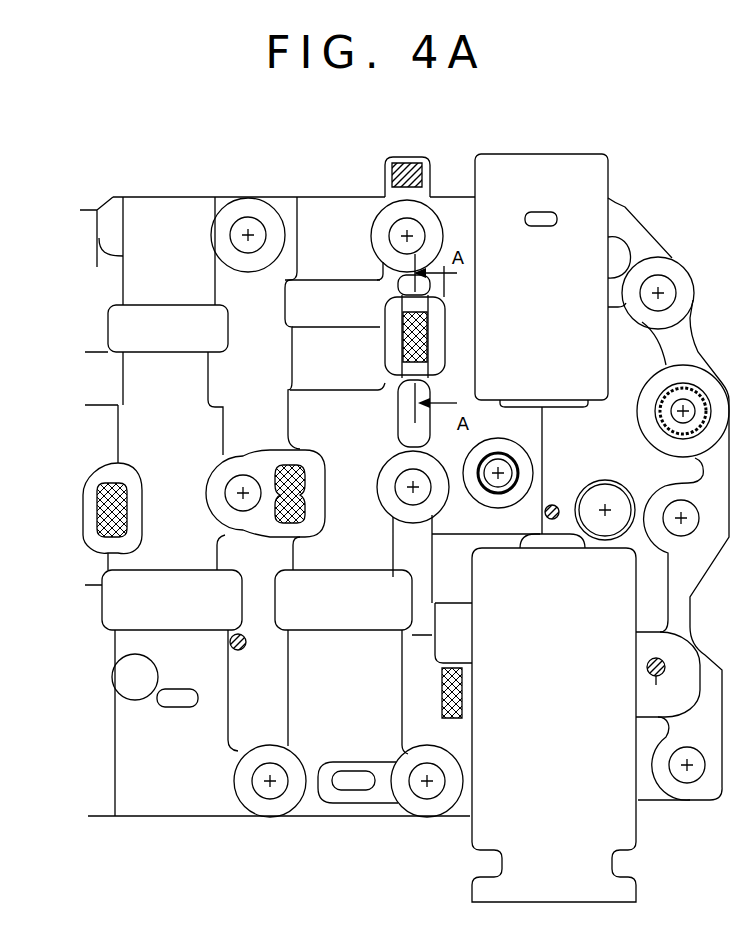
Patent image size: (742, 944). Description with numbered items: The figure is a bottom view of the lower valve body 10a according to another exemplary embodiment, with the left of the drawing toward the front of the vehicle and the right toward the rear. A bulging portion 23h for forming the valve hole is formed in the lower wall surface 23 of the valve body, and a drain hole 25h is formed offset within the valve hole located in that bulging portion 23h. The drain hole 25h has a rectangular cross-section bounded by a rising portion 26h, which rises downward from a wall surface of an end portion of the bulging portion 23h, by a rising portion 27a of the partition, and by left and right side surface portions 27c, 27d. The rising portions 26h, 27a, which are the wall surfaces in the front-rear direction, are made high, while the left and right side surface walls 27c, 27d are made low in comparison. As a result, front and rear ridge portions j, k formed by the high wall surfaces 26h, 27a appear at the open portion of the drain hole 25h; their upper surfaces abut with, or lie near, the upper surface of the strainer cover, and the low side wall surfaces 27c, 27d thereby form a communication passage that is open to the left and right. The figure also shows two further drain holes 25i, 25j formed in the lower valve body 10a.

The lower wall surface 23 is at (287, 200).
The lower valve body 10a is at (313, 185).
The bulging portion 23h is at (332, 343).
The front ridge portion j is at (392, 308).
The left side surface portion 27c is at (432, 284).
The rear ridge portion k is at (430, 309).
The drain hole 25h is at (428, 335).
The rising portion of the partition 27a is at (440, 350).
The right side surface portion 27d is at (432, 385).
The rising portion 26h is at (392, 356).
The drain hole 25j is at (97, 492).
The drain hole 25i is at (296, 500).